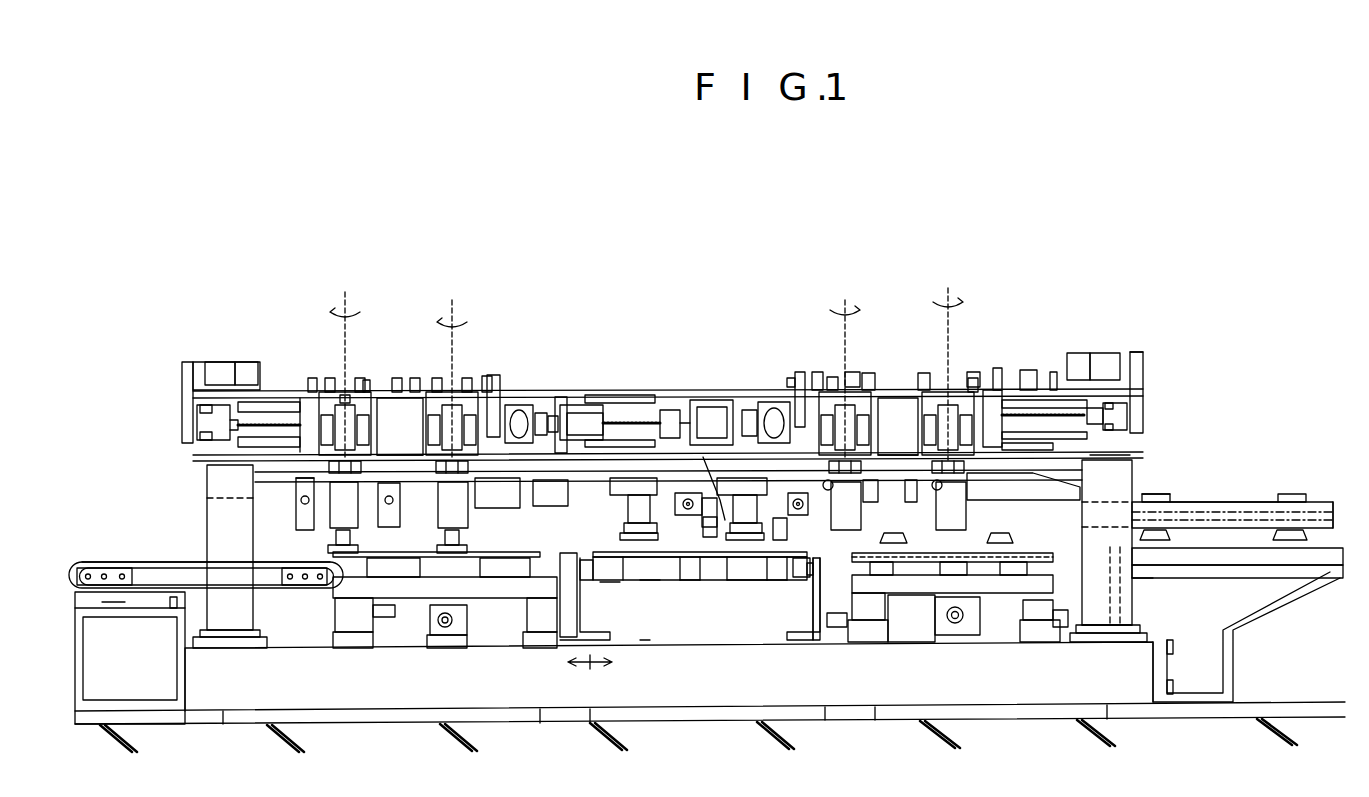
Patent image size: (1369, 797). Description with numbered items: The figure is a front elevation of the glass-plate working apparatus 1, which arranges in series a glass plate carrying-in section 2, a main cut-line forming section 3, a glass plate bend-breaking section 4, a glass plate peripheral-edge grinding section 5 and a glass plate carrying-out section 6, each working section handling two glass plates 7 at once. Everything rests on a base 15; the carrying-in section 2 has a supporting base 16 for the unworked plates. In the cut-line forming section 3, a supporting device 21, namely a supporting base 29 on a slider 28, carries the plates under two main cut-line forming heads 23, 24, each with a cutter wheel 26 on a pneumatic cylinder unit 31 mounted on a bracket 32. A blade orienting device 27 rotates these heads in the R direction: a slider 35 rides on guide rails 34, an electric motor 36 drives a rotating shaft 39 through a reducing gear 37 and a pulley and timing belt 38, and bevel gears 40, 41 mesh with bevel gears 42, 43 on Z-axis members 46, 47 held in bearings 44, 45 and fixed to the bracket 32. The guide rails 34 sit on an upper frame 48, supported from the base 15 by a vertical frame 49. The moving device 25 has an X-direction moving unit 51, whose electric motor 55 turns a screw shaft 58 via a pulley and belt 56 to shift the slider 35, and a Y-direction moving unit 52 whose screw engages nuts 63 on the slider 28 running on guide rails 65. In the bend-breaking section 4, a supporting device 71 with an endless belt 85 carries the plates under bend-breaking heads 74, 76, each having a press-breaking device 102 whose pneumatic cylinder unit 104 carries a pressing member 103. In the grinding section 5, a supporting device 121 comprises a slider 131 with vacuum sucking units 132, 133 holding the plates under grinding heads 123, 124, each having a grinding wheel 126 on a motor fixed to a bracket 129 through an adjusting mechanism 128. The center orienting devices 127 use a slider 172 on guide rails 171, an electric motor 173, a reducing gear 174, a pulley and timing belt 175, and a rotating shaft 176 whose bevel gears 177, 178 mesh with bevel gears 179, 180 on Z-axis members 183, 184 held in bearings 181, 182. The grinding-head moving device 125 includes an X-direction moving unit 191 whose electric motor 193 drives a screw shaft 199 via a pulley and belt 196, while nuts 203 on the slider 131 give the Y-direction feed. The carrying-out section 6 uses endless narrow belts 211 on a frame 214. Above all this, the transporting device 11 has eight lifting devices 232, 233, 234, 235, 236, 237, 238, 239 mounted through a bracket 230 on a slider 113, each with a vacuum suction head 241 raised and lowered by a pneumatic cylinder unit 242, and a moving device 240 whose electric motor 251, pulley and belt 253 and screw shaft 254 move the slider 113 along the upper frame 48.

The glass-plate working apparatus 1 is at (1024, 293).
The glass plate carrying-in section 2 is at (1258, 480).
The main cut-line forming section 3 is at (922, 664).
The glass plate bend-breaking section 4 is at (669, 653).
The glass plate peripheral-edge grinding section 5 is at (400, 648).
The glass plate carrying-out section 6 is at (122, 536).
The glass plate 7 is at (660, 535).
The transporting device 11 is at (1271, 490).
The base 15 is at (1000, 700).
The supporting base 16 is at (1335, 582).
The supporting device 21 is at (1100, 581).
The main cut-line forming head 23 is at (815, 600).
The main cut-line forming head 24 is at (952, 610).
The moving device 25 is at (1100, 353).
The cutter wheel 26 is at (848, 580).
The blade orienting device 27 is at (790, 378).
The slider 28 is at (937, 640).
The supporting base 29 is at (1118, 547).
The pneumatic cylinder unit 31 is at (878, 485).
The bracket 32 is at (898, 439).
The guide rails 34 is at (1000, 372).
The slider 35 is at (748, 408).
The electric motor 36 is at (700, 410).
The reducing gear 37 is at (774, 402).
The pulley and timing belt 38 is at (798, 372).
The rotating shaft 39 is at (922, 373).
The bevel gear 40 is at (817, 372).
The bevel gear 41 is at (943, 378).
The bevel gear 42 is at (852, 372).
The bevel gear 43 is at (972, 372).
The bearing 44 is at (872, 378).
The bearing 45 is at (975, 378).
The Z-axis member 46 is at (850, 378).
The Z-axis member 47 is at (898, 425).
The upper frame 48 is at (645, 395).
The vertical frame 49 is at (207, 514).
The X-direction moving unit 51 is at (1150, 340).
The Y-direction moving unit 52 is at (960, 705).
The electric motor 55 is at (1078, 353).
The pulley and belt 56 is at (1145, 365).
The screw shaft 58 is at (1106, 353).
The nuts 63 is at (970, 640).
The guide rails 65 is at (865, 630).
The supporting device 71 is at (646, 633).
The bend-breaking head 74 is at (772, 590).
The bend-breaking head 76 is at (678, 590).
The endless belt 85 is at (645, 578).
The press-breaking device 102 is at (783, 538).
The pressing member 103 is at (778, 560).
The pneumatic cylinder unit 104 is at (692, 552).
The slider 113 is at (655, 450).
The supporting device 121 is at (343, 603).
The grinding head 123 is at (330, 520).
The grinding head 124 is at (435, 640).
The grinding-head moving device 125 is at (245, 356).
The grinding wheel 126 is at (328, 548).
The center orienting device 127 is at (539, 353).
The adjusting mechanism 128 is at (297, 480).
The bracket 129 is at (405, 500).
The slider 131 is at (555, 640).
The vacuum sucking unit 132 is at (392, 600).
The vacuum sucking unit 133 is at (622, 568).
The guide rails 171 is at (270, 400).
The slider 172 is at (562, 395).
The electric motor 173 is at (603, 395).
The reducing gear 174 is at (502, 372).
The pulley and timing belt 175 is at (494, 375).
The rotating shaft 176 is at (397, 378).
The bevel gear 177 is at (335, 378).
The bevel gear 178 is at (436, 378).
The bevel gear 179 is at (352, 378).
The bevel gear 180 is at (400, 426).
The bearing 181 is at (313, 378).
The bearing 182 is at (423, 440).
The Z-axis member 183 is at (356, 380).
The Z-axis member 184 is at (466, 378).
The X-direction moving unit 191 is at (196, 341).
The electric motor 193 is at (220, 362).
The pulley and belt 196 is at (181, 392).
The screw shaft 199 is at (205, 455).
The nuts 203 is at (446, 650).
The endless narrow belts 211 is at (158, 562).
The frame 214 is at (160, 705).
The bracket 230 is at (1080, 480).
The lifting device 232 is at (1328, 494).
The lifting device 233 is at (1258, 502).
The lifting device 234 is at (1030, 642).
The lifting device 235 is at (875, 640).
The lifting device 236 is at (740, 590).
The lifting device 237 is at (611, 523).
The lifting device 238 is at (520, 550).
The lifting device 239 is at (356, 580).
The moving device 240 is at (1030, 370).
The vacuum suction head 241 is at (640, 590).
The pneumatic cylinder unit 242 is at (685, 395).
The electric motor 251 is at (995, 368).
The pulley and belt 253 is at (1128, 455).
The screw shaft 254 is at (1128, 440).